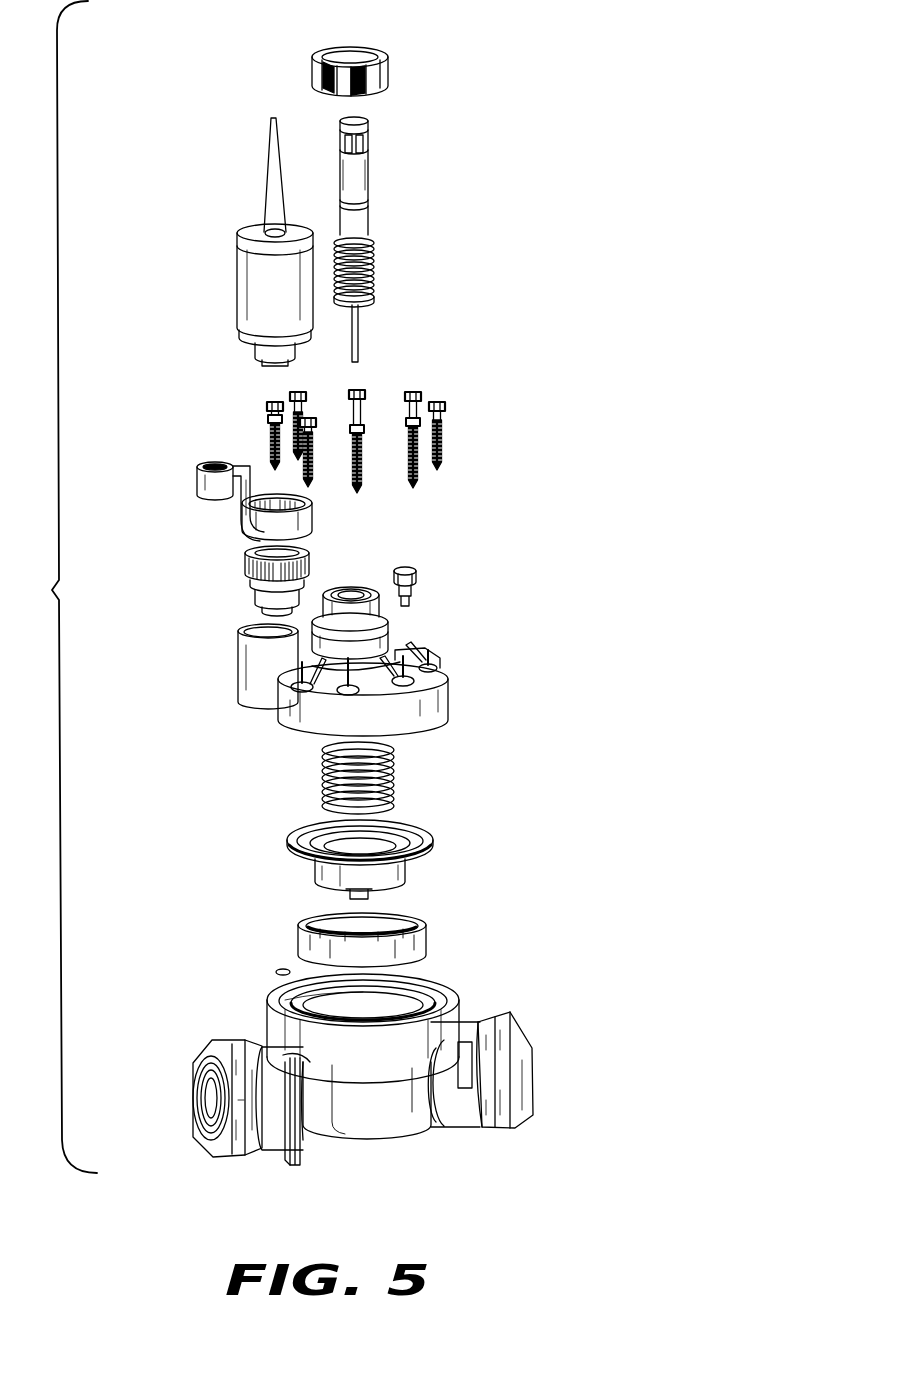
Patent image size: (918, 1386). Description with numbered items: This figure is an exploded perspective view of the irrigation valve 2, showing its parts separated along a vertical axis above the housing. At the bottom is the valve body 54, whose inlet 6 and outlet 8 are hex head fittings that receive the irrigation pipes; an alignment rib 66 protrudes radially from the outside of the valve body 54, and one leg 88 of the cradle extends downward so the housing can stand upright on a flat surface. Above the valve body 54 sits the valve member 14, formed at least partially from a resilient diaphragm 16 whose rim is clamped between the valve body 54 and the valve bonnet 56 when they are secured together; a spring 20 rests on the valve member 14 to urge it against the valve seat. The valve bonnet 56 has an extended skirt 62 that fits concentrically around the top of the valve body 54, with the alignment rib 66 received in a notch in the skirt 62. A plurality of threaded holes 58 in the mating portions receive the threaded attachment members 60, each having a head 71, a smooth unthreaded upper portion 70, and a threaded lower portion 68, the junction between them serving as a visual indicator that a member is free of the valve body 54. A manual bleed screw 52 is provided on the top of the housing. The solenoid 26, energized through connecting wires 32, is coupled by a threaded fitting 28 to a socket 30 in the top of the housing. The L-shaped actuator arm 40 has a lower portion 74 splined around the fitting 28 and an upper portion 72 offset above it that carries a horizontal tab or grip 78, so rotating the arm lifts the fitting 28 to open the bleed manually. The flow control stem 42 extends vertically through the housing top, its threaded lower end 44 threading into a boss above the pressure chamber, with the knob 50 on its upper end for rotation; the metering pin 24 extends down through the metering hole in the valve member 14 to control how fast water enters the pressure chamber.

The irrigation valve 2 is at (56, 587).
The knob 50 is at (312, 60).
The connecting wires 32 is at (268, 196).
The solenoid 26 is at (237, 282).
The flow control stem 42 is at (370, 183).
The lower end of flow control stem 44 is at (376, 297).
The metering pin 24 is at (359, 340).
The threaded attachment members 60 is at (407, 410).
The head 71 is at (444, 400).
The upper portion 70 is at (443, 418).
The lower portion 68 is at (444, 455).
The actuator arm 40 is at (206, 483).
The tab or grip 78 is at (200, 490).
The upper portion of actuator arm 72 is at (250, 470).
The lower portion of actuator arm 74 is at (243, 526).
The threaded fitting 28 is at (250, 588).
The socket 30 is at (240, 682).
The valve bonnet 56 is at (373, 686).
The skirt 62 is at (440, 712).
The threaded holes 58 is at (436, 668).
The manual bleed screw 52 is at (447, 574).
The spring 20 is at (395, 786).
The valve member 14 is at (371, 859).
The resilient diaphragm 16 is at (300, 852).
The valve body 54 is at (270, 1022).
The alignment rib 66 is at (324, 996).
The outlet 8 is at (236, 1046).
The inlet 6 is at (510, 1025).
The legs 88 is at (300, 1162).